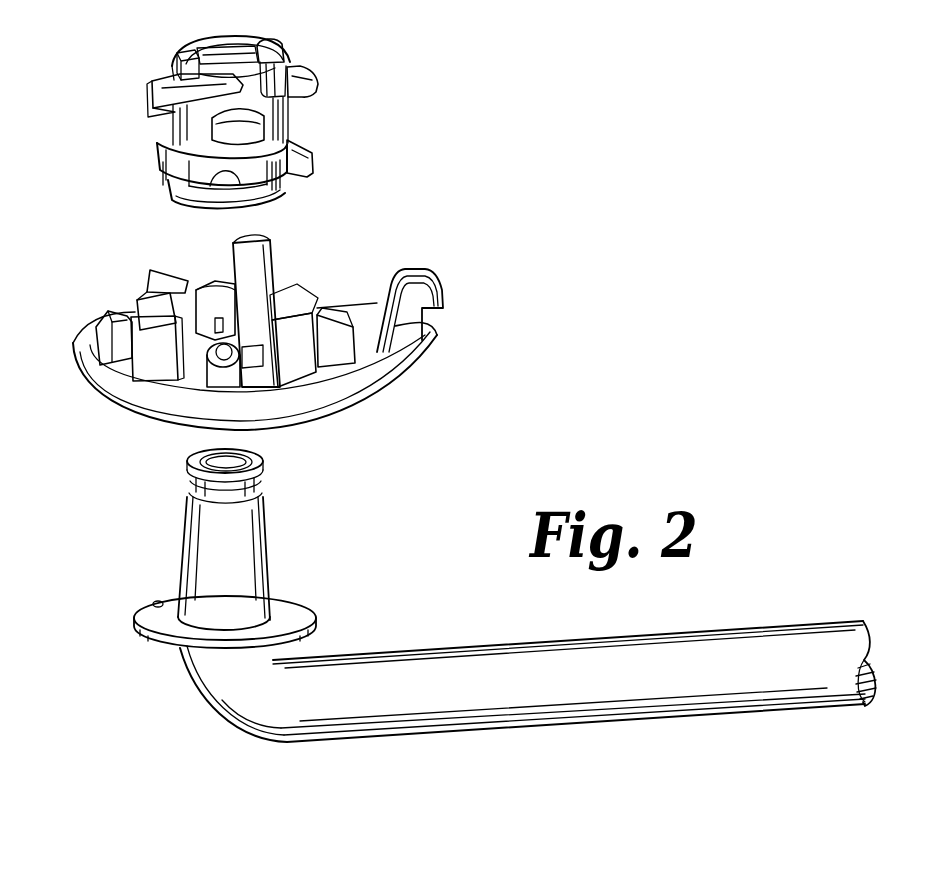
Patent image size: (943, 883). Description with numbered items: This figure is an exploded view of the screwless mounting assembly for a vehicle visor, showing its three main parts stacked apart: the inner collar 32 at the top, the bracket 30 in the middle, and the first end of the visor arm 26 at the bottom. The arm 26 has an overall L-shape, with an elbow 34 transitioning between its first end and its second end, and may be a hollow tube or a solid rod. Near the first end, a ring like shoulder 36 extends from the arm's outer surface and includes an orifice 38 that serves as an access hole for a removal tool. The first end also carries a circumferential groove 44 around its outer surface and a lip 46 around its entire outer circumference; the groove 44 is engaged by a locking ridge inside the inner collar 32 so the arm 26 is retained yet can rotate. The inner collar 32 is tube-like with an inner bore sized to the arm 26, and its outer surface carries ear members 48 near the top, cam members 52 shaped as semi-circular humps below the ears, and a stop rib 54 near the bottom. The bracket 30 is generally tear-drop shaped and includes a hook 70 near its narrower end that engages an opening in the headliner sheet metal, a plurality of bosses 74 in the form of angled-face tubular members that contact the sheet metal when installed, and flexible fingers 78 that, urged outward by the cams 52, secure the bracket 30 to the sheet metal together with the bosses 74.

The arm 26 is at (560, 713).
The bracket 30 is at (387, 380).
The inner collar 32 is at (283, 117).
The elbow 34 is at (234, 732).
The ring like shoulder 36 is at (323, 623).
The orifice 38 is at (160, 600).
The circumferential groove 44 is at (267, 495).
The lip 46 is at (268, 473).
The ear members 48 is at (172, 74).
The cam members 52 is at (240, 128).
The stop rib 54 is at (317, 170).
The hook 70 is at (430, 300).
The bosses 74 is at (217, 290).
The flexible fingers 78 is at (283, 258).